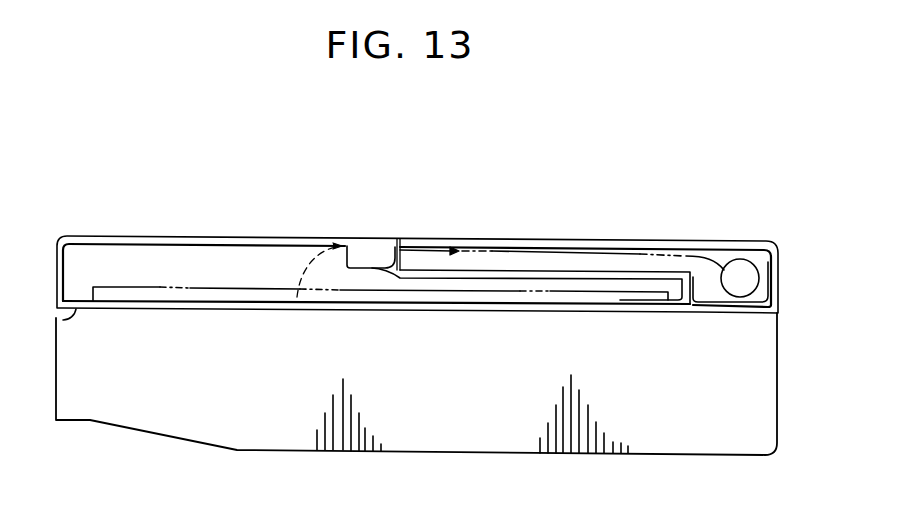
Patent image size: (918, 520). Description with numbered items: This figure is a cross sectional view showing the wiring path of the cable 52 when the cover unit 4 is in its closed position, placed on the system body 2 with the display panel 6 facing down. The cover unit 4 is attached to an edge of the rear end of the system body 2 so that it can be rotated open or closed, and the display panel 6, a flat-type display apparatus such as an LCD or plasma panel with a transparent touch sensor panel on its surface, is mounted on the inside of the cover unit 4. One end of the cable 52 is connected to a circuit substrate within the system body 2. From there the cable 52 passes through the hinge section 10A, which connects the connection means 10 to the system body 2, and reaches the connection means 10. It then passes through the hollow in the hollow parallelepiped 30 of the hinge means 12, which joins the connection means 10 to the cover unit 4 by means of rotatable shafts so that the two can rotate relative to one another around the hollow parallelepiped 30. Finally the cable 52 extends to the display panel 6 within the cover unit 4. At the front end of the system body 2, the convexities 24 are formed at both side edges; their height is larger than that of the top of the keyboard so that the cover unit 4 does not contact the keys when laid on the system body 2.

The system body 2 is at (93, 402).
The cover unit 4 is at (110, 248).
The display panel 6 is at (233, 293).
The connection means 10 is at (757, 252).
The hinge section 10A is at (749, 382).
The hinge means 12 is at (357, 226).
The convexities 24 is at (58, 313).
The hollow parallelepiped 30 is at (393, 238).
The cable 52 is at (614, 250).